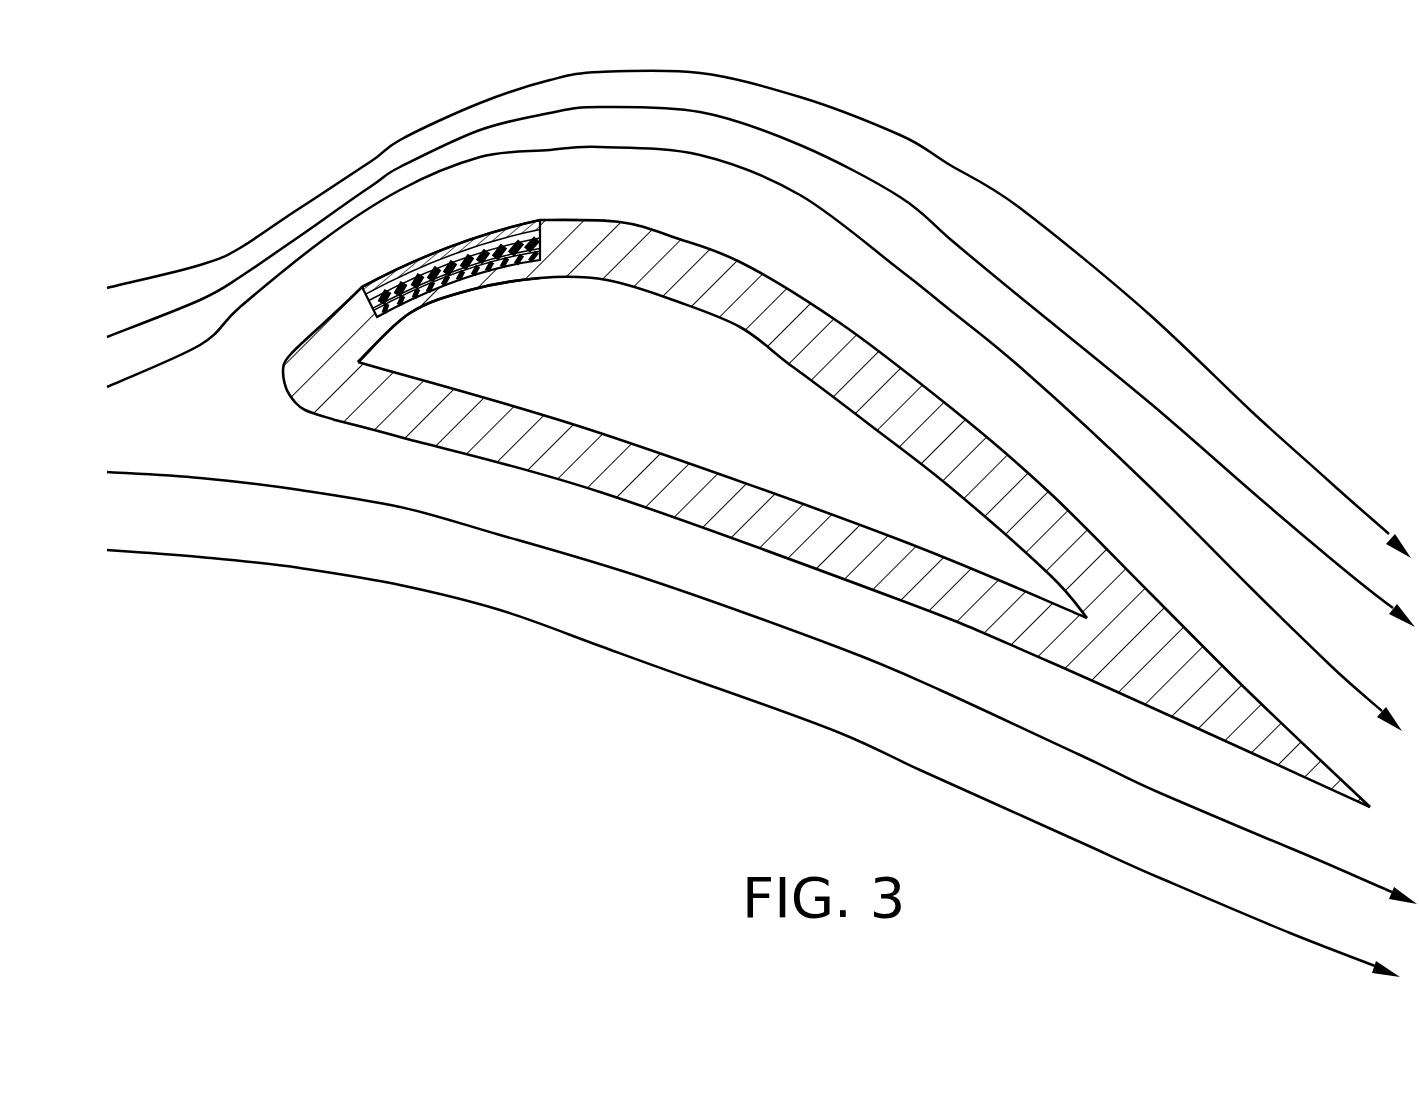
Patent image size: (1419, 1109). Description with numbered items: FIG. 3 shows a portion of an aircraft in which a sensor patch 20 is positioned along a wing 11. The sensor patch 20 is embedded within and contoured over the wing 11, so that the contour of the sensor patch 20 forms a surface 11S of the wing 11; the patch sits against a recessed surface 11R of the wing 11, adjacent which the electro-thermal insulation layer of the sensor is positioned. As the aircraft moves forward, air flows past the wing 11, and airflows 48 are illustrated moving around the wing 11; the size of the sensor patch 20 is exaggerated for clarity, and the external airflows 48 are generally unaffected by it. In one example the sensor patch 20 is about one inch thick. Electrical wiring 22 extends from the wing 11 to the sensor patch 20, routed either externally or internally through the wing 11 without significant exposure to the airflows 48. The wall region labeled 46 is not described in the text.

The wing 11 is at (727, 485).
The surface of the wing 11S is at (562, 220).
The recessed surface of the wing 11R is at (403, 317).
The sensor patch 20 is at (393, 271).
The electrical wiring 22 is at (567, 242).
The airfoil wall 46 is at (703, 288).
The airflows 48 is at (1150, 320).